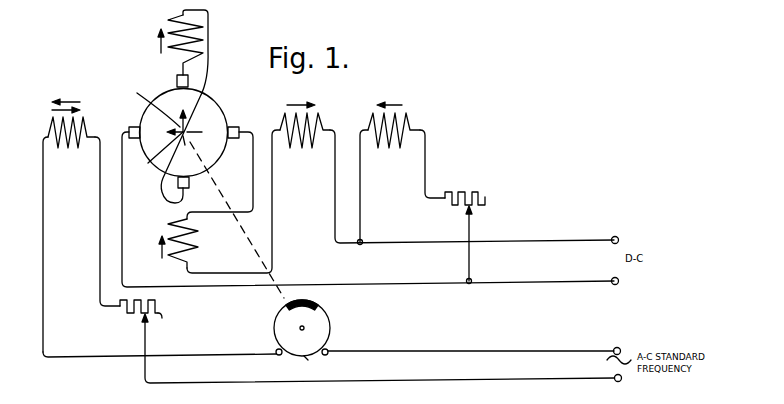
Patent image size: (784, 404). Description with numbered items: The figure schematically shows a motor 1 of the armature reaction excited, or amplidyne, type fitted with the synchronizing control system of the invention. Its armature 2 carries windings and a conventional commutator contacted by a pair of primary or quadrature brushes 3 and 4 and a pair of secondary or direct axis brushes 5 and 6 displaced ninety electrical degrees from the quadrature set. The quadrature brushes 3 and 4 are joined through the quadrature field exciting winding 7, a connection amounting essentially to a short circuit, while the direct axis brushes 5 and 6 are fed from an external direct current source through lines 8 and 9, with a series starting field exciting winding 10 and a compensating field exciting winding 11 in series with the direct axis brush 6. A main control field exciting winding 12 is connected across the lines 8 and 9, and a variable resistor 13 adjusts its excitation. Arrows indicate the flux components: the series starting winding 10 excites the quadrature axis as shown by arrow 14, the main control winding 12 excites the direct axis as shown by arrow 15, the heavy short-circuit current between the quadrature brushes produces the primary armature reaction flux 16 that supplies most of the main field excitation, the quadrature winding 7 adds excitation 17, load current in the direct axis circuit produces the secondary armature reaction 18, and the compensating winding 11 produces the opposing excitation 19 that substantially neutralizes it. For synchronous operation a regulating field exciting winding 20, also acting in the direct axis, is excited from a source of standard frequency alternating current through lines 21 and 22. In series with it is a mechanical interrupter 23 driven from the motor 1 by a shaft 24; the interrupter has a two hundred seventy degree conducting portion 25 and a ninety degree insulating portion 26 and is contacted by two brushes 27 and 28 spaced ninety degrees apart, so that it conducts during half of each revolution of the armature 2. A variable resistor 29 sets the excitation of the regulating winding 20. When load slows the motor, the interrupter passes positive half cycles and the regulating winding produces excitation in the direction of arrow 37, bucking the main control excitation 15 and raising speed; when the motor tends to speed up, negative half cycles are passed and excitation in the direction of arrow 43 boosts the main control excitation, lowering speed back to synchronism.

The motor 1 is at (212, 84).
The armature 2 is at (216, 100).
The quadrature brush 3 is at (177, 80).
The quadrature brush 4 is at (189, 185).
The direct axis brush 5 is at (134, 139).
The direct axis brush 6 is at (238, 127).
The quadrature field exciting winding 7 is at (196, 35).
The line 8 is at (615, 236).
The line 9 is at (615, 285).
The series starting field exciting winding 10 is at (198, 247).
The compensating field exciting winding 11 is at (308, 146).
The main control field exciting winding 12 is at (398, 146).
The variable resistor 13 is at (463, 191).
The arrow 14 is at (161, 249).
The arrow 15 is at (388, 105).
The arrow 16 is at (165, 115).
The arrow 17 is at (160, 40).
The arrow 18 is at (161, 154).
The arrow 19 is at (299, 105).
The regulating field exciting winding 20 is at (67, 150).
The line 21 is at (617, 347).
The line 22 is at (618, 382).
The mechanical interrupter 23 is at (333, 316).
The shaft 24 is at (248, 235).
The conducting portion 25 is at (308, 360).
The insulating portion 26 is at (299, 302).
The brush 27 is at (276, 351).
The brush 28 is at (329, 351).
The variable resistor 29 is at (158, 316).
The arrow 37 is at (72, 110).
The arrow 43 is at (64, 101).